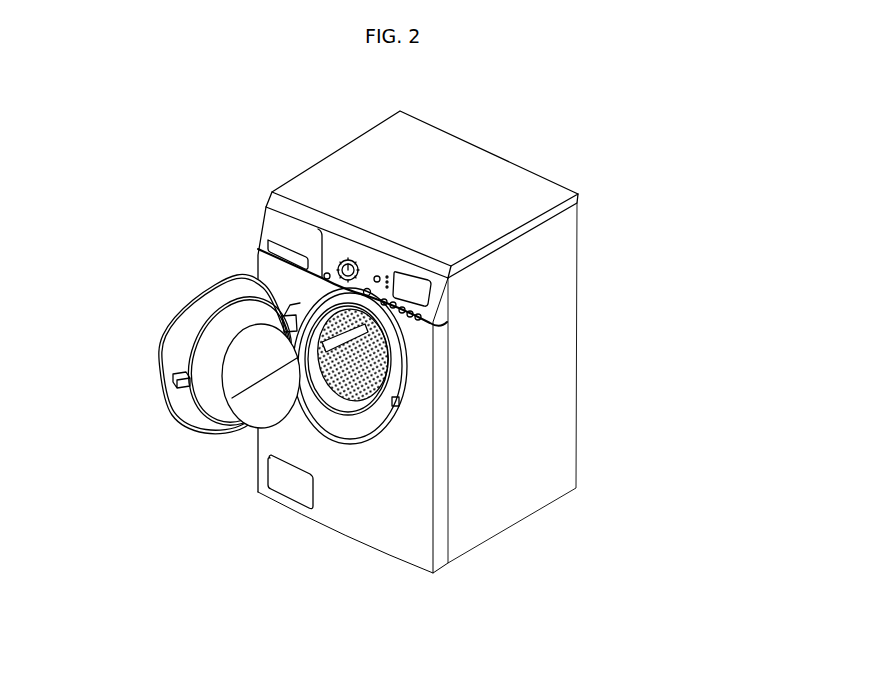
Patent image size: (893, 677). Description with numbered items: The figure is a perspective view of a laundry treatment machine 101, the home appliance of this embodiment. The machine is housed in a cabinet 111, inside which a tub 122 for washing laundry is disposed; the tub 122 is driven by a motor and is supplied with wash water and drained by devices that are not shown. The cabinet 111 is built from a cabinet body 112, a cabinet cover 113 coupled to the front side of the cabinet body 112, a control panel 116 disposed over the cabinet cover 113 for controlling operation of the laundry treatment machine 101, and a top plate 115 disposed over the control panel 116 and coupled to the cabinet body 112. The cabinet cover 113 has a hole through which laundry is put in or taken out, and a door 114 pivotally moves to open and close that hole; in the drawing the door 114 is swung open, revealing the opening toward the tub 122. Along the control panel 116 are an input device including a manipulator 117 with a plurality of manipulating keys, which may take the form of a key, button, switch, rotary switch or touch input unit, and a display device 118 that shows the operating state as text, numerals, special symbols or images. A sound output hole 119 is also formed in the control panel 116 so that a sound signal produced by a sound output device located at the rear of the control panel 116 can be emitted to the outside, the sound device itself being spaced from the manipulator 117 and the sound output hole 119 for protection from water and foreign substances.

The laundry treatment machine 101 is at (286, 165).
The cabinet 111 is at (592, 362).
The cabinet body 112 is at (520, 493).
The cabinet cover 113 is at (440, 562).
The door 114 is at (176, 322).
The top plate 115 is at (538, 189).
The control panel 116 is at (445, 310).
The manipulator 117 is at (352, 260).
The display device 118 is at (412, 287).
The sound output hole 119 is at (379, 276).
The tub 122 is at (371, 390).